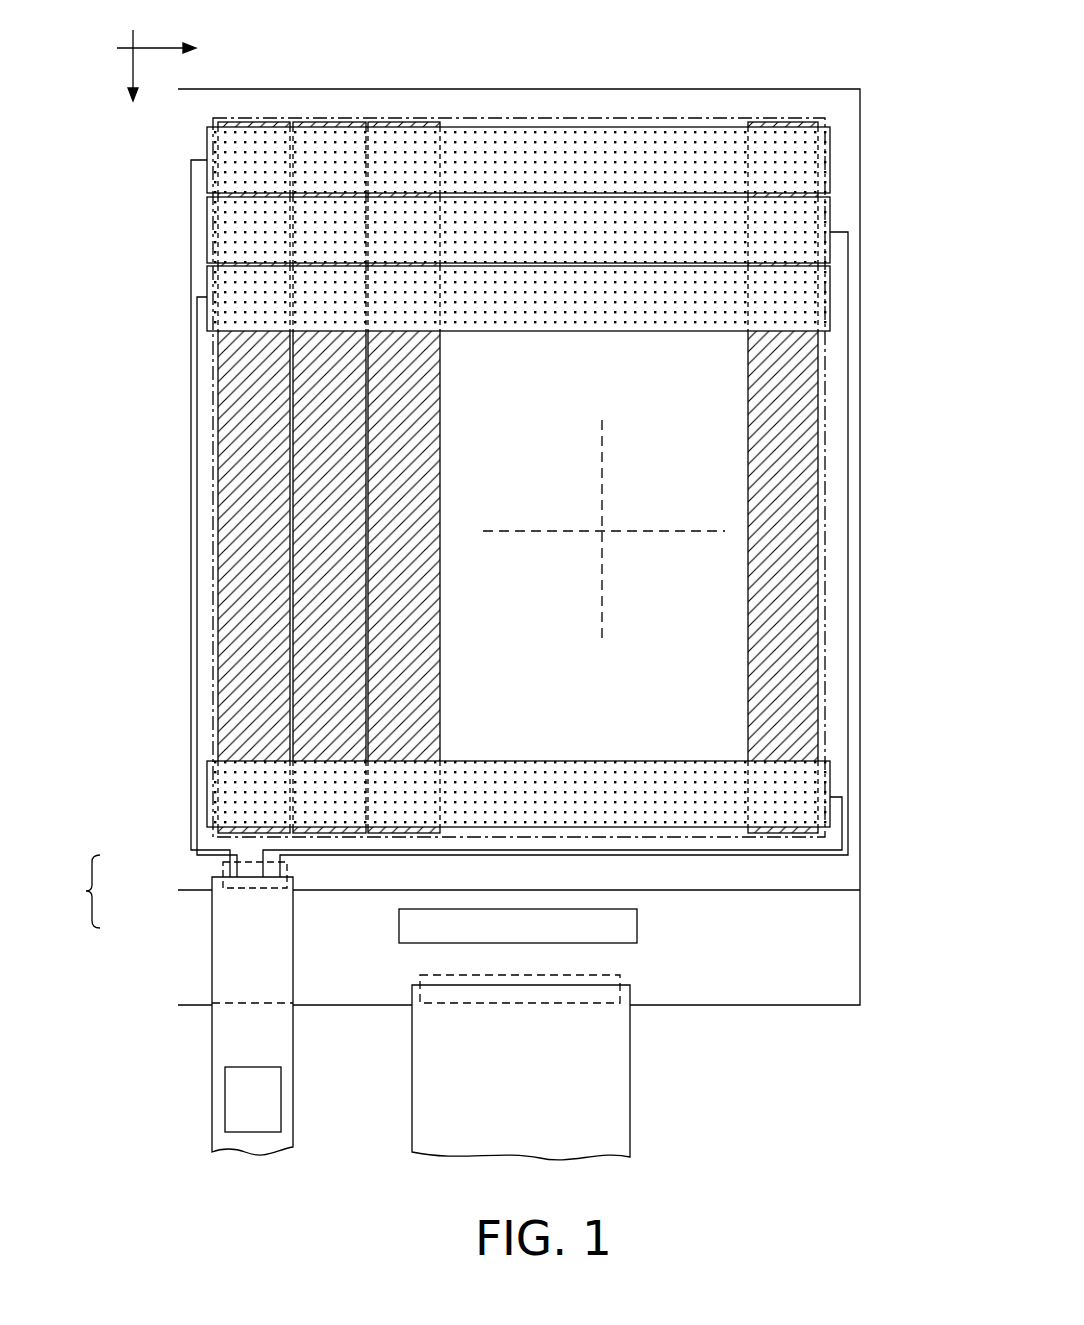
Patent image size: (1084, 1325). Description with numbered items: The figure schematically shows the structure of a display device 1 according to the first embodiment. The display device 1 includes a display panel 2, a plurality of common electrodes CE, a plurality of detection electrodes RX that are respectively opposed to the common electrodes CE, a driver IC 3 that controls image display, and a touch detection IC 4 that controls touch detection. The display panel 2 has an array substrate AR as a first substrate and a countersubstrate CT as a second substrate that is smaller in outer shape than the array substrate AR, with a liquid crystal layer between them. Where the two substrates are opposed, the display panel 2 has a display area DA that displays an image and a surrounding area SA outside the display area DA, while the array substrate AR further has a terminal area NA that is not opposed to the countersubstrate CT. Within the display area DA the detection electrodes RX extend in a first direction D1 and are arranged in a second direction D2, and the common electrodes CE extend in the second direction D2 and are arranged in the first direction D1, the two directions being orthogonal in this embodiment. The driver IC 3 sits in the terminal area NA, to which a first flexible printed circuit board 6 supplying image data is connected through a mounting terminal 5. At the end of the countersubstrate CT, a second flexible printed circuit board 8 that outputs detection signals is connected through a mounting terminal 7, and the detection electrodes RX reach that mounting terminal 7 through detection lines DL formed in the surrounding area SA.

The display device 1 is at (790, 72).
The display panel 2 is at (81, 891).
The driver IC 3 is at (637, 925).
The touch detection IC 4 is at (228, 1105).
The mounting terminal 5 is at (600, 973).
The first flexible printed circuit board 6 is at (630, 1077).
The mounting terminal 7 is at (290, 870).
The second flexible printed circuit board 8 is at (212, 1042).
The countersubstrate CT is at (185, 875).
The array substrate AR is at (185, 912).
The display area DA is at (650, 118).
The surrounding area SA is at (835, 870).
The terminal area NA is at (835, 942).
The common electrode CE is at (271, 412).
The detection electrode RX is at (561, 178).
The detection line DL is at (197, 660).
The first direction D1 is at (179, 49).
The second direction D2 is at (140, 83).